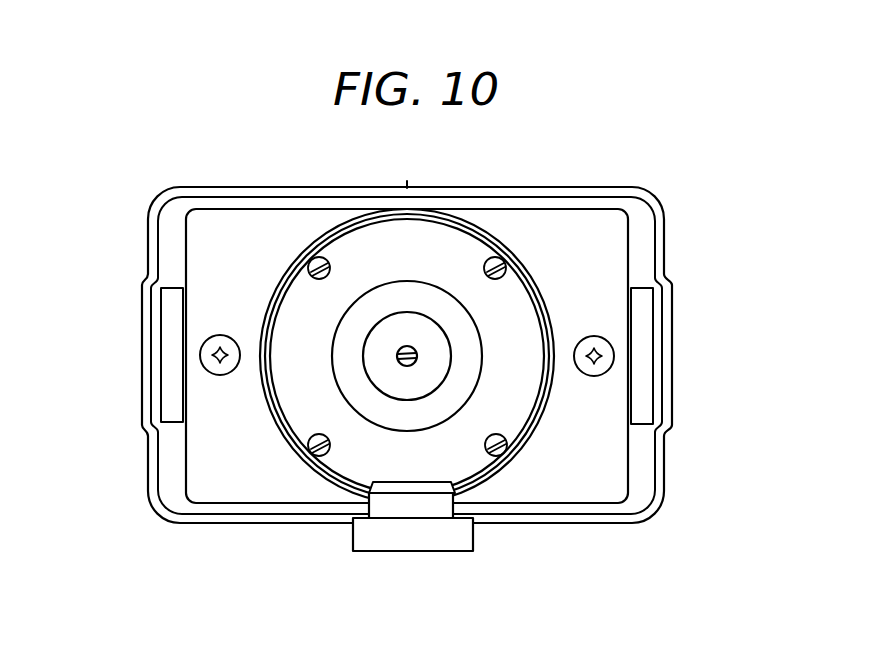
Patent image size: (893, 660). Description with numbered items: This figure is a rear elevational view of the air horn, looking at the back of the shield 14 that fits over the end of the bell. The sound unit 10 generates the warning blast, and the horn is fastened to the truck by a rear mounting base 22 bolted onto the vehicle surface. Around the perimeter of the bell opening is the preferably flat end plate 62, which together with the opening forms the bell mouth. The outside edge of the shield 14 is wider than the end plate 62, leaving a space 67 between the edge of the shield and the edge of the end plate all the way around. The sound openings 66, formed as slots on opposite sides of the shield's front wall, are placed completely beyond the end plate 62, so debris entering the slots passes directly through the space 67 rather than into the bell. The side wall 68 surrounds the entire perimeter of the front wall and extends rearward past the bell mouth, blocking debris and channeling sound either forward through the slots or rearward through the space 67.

The sound unit 10 is at (487, 236).
The shield 14 is at (663, 223).
The rear mounting base 22 is at (472, 550).
The end plate 62 is at (577, 235).
The sound openings 66 is at (172, 355).
The space 67 is at (230, 508).
The side wall 68 is at (143, 297).